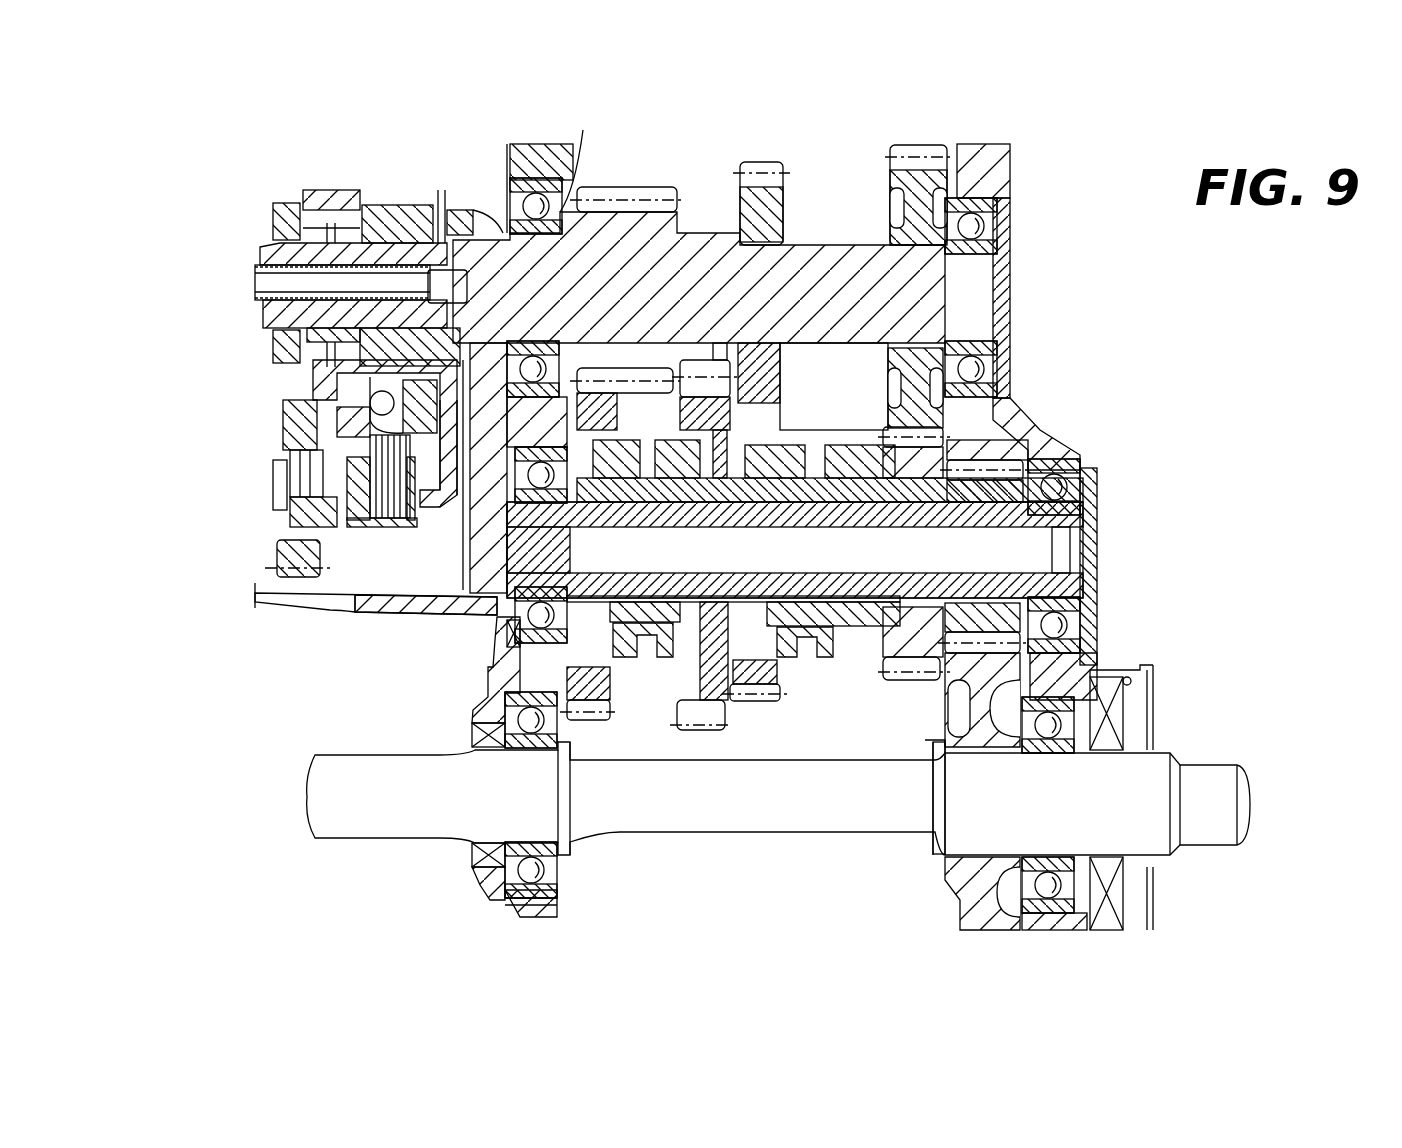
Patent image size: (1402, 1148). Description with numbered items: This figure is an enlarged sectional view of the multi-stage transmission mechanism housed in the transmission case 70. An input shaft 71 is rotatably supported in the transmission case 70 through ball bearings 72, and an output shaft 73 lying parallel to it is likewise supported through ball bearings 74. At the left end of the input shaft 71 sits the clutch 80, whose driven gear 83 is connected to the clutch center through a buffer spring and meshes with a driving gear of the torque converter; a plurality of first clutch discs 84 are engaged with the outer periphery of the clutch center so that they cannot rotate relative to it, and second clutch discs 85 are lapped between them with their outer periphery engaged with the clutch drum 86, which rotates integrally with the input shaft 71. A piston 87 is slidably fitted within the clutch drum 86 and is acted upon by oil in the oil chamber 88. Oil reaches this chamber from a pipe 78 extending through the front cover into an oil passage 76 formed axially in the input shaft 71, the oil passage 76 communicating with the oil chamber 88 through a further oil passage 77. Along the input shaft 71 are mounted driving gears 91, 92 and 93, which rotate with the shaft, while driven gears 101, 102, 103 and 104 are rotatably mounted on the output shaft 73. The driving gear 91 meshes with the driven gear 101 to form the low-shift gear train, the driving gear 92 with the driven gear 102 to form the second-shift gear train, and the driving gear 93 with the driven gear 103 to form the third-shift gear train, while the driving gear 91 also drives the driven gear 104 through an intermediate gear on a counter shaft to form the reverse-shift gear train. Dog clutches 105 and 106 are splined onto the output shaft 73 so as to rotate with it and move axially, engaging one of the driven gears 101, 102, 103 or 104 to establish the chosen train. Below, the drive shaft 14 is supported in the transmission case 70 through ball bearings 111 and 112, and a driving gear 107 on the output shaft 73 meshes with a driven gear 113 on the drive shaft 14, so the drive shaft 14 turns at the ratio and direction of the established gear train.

The drive shaft 14 is at (750, 828).
The transmission case 70 is at (1003, 320).
The input shaft 71 is at (820, 258).
The ball bearings 72 is at (540, 200).
The output shaft 73 is at (1085, 518).
The ball bearings 74 is at (1095, 482).
The oil passage 76 is at (457, 267).
The oil passage 77 is at (437, 205).
The pipe 78 is at (255, 272).
The clutch 80 is at (248, 384).
The driven gear 83 is at (275, 553).
The first clutch discs 84 is at (373, 527).
The second clutch discs 85 is at (383, 527).
The clutch drum 86 is at (453, 397).
The piston 87 is at (432, 507).
The oil chamber 88 is at (452, 465).
The driving gear 91 is at (665, 190).
The driving gear 92 is at (773, 163).
The driving gear 93 is at (917, 148).
The driven gear 101 is at (630, 405).
The driven gear 102 is at (703, 383).
The driven gear 103 is at (775, 428).
The driven gear 104 is at (893, 428).
The dog clutch 105 is at (663, 650).
The dog clutch 106 is at (820, 653).
The driving gear 107 is at (1018, 447).
The ball bearings 111 is at (530, 893).
The ball bearings 112 is at (1060, 680).
The driven gear 113 is at (967, 680).